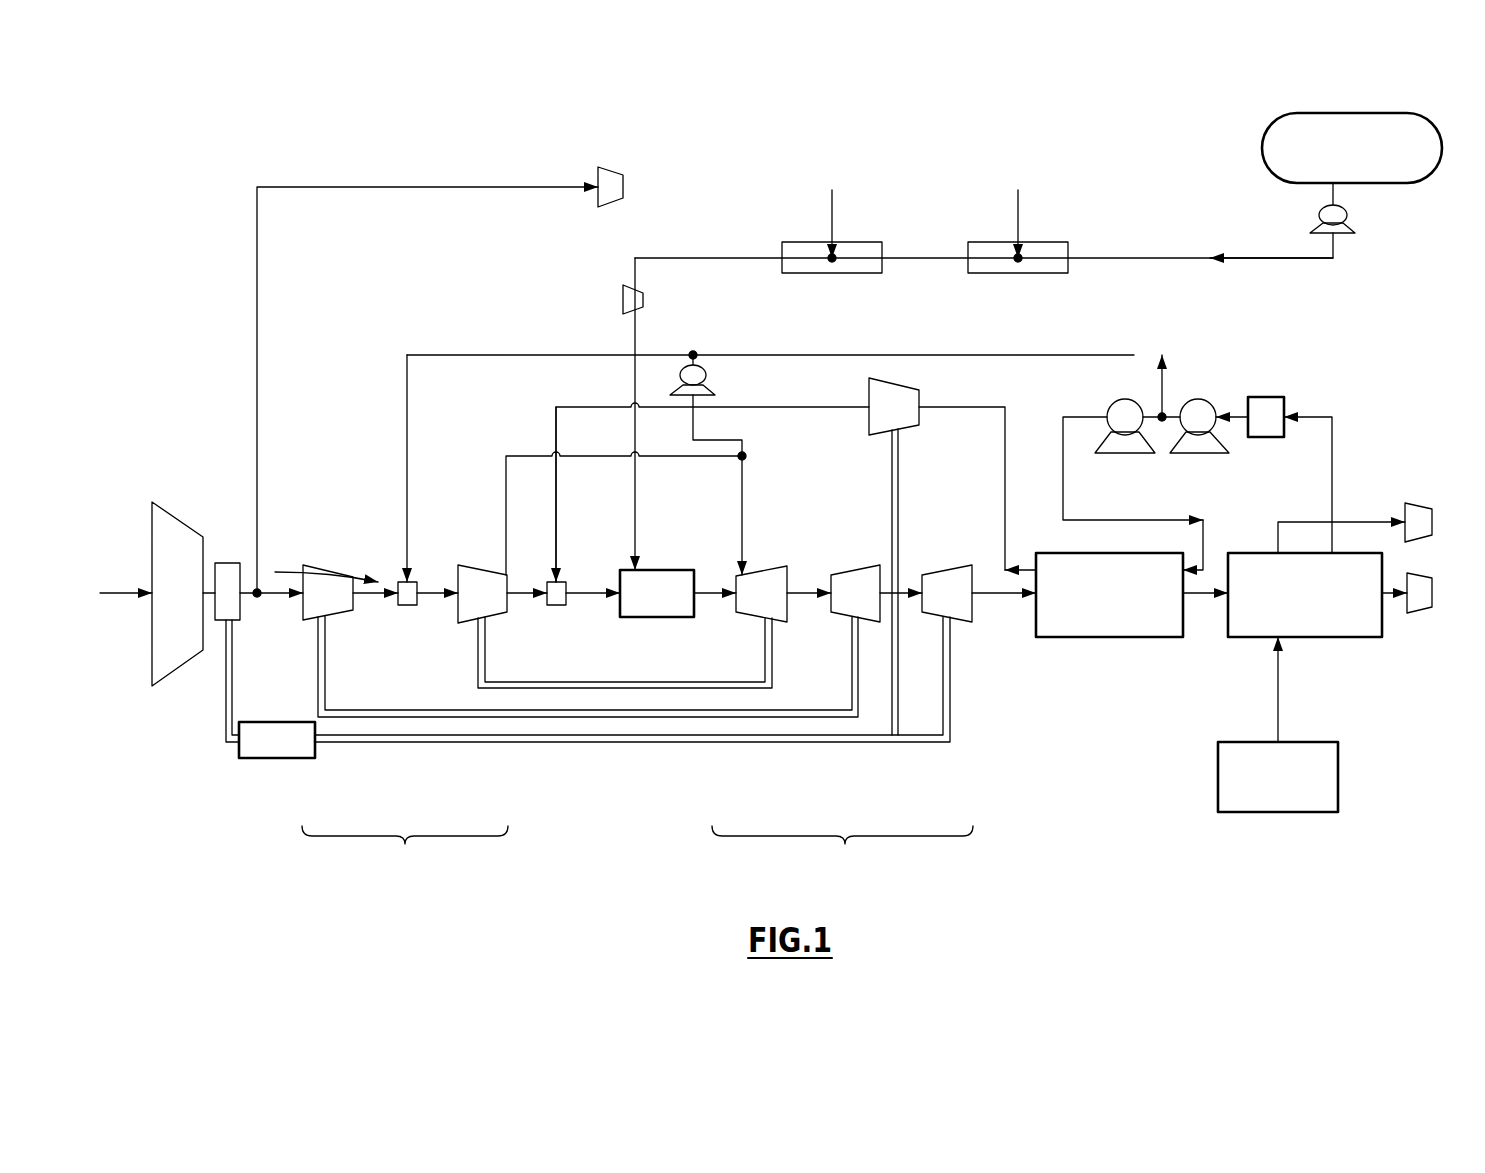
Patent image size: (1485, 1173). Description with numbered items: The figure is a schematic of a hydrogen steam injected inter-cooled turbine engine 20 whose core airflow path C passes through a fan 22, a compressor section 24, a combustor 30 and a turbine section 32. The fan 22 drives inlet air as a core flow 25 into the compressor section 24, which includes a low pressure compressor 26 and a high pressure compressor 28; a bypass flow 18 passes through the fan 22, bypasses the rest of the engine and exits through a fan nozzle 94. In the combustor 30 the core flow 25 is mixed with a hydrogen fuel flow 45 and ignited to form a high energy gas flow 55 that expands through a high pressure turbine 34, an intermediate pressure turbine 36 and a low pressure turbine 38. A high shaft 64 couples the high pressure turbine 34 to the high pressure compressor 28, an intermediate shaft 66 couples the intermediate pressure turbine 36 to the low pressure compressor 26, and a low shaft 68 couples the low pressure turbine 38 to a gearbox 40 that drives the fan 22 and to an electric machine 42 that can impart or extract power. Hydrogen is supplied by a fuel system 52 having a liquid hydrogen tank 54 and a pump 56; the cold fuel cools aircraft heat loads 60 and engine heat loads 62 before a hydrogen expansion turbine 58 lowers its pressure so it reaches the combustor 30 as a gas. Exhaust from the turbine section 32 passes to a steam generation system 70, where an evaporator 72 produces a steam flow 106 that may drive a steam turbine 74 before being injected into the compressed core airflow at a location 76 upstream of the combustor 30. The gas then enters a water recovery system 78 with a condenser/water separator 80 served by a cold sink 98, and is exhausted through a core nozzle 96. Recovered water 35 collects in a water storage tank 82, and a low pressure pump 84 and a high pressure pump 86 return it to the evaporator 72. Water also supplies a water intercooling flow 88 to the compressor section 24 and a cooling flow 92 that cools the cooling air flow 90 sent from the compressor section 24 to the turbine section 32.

The hydrogen steam injected inter-cooled turbine engine 20 is at (258, 133).
The bypass flow 18 is at (258, 372).
The fan 22 is at (172, 655).
The compressor section 24 is at (405, 851).
The core flow 25 is at (378, 590).
The low pressure compressor 26 is at (340, 610).
The high pressure compressor 28 is at (495, 605).
The combustor 30 is at (657, 620).
The turbine section 32 is at (842, 851).
The high pressure turbine 34 is at (752, 627).
The water 35 is at (1332, 453).
The intermediate pressure turbine 36 is at (845, 627).
The low pressure turbine 38 is at (960, 630).
The gearbox 40 is at (237, 605).
The electric machine 42 is at (300, 750).
The fuel flow 45 is at (637, 505).
The fuel system 52 is at (1190, 182).
The liquid hydrogen tank 54 is at (1393, 172).
The high energy gas flow 55 is at (712, 590).
The pump 56 is at (1340, 236).
The hydrogen expansion turbine 58 is at (645, 300).
The aircraft heat loads 60 is at (1012, 230).
The engine heat loads 62 is at (826, 230).
The high shaft 64 is at (540, 688).
The intermediate shaft 66 is at (560, 718).
The low shaft 68 is at (610, 742).
The steam generation system 70 is at (963, 400).
The evaporator 72 is at (1115, 630).
The steam turbine 74 is at (905, 420).
The steam injection location 76 is at (562, 582).
The water recovery system 78 is at (1363, 398).
The condenser/water separator 80 is at (1338, 625).
The water storage tank 82 is at (1262, 398).
The low pressure pump 84 is at (1205, 402).
The high pressure pump 86 is at (1120, 402).
The water intercooling flow 88 is at (900, 352).
The cooling air flow 90 is at (505, 500).
The cooling flow 92 is at (688, 364).
The fan nozzle 94 is at (618, 167).
The core nozzle 96 is at (1420, 612).
The cold sink 98 is at (1338, 778).
The steam flow 106 is at (556, 430).
The core airflow path C is at (320, 576).